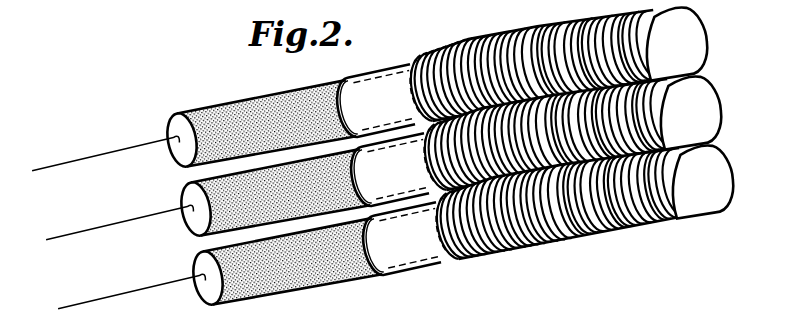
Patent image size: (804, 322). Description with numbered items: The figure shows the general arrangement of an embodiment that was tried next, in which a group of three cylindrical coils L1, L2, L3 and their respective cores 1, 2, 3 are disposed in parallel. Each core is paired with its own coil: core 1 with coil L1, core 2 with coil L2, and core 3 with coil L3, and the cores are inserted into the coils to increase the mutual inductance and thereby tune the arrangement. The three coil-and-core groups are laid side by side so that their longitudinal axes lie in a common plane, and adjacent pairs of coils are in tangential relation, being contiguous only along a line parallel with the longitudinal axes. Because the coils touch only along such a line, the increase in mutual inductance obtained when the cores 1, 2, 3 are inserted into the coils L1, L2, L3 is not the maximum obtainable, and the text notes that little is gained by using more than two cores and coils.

The core 1 is at (171, 134).
The core 2 is at (183, 201).
The core 3 is at (198, 269).
The cylindrical coil L1 is at (653, 43).
The cylindrical coil L2 is at (670, 110).
The cylindrical coil L3 is at (680, 180).